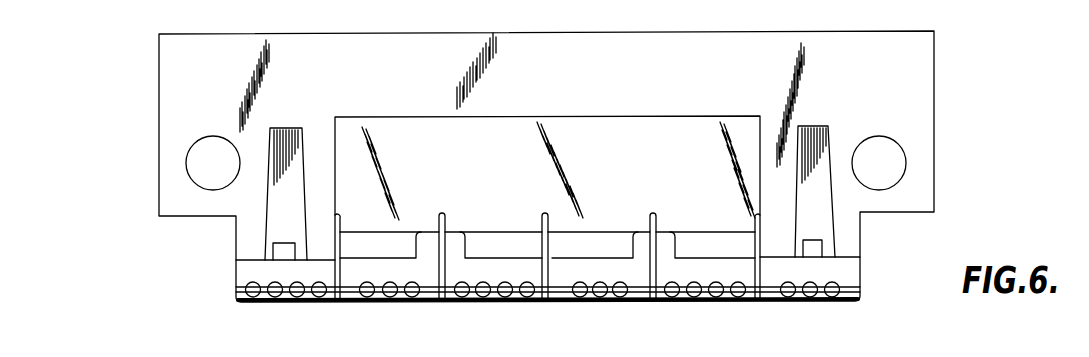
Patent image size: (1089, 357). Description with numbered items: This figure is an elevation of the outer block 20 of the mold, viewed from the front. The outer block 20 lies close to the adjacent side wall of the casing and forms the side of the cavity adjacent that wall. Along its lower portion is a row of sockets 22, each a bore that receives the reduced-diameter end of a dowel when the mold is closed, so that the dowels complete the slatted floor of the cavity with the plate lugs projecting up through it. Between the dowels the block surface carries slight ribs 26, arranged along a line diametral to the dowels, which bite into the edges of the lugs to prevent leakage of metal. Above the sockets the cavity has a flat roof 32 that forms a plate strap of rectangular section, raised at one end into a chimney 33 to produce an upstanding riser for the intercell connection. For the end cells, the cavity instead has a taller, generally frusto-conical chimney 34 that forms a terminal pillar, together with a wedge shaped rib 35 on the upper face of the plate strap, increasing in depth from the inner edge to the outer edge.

The outer block 20 is at (168, 91).
The socket 22 is at (390, 296).
The rib 26 is at (346, 304).
The flat roof 32 is at (528, 258).
The chimney 33 is at (455, 236).
The taller chimney 34 is at (819, 136).
The wedge shaped rib 35 is at (823, 248).